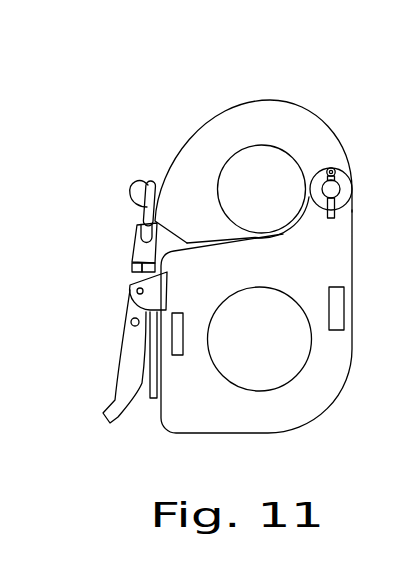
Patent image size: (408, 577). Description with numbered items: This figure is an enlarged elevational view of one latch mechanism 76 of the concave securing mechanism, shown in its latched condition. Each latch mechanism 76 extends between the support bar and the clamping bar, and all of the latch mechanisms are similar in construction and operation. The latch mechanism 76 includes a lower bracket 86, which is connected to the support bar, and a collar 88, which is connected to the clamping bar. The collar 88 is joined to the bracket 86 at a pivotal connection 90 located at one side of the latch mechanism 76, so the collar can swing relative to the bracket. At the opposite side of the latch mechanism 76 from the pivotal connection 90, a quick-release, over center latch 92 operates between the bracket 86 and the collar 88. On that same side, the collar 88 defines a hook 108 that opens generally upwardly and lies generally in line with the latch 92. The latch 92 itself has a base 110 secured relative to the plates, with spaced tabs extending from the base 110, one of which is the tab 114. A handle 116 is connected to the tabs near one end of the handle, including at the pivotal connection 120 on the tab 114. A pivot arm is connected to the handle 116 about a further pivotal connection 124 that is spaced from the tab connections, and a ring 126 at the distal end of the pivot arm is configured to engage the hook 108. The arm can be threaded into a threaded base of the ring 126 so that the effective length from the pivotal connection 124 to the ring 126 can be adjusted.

The latch mechanism 76 is at (308, 88).
The lower bracket 86 is at (287, 412).
The collar 88 is at (252, 117).
The pivotal connection 90 is at (331, 190).
The quick-release, over center latch 92 is at (108, 277).
The hook 108 is at (128, 193).
The base 110 is at (148, 396).
The tab 114 is at (158, 282).
The handle 116 is at (116, 401).
The pivotal connection 120 is at (143, 292).
The pivotal connection 124 is at (131, 322).
The ring 126 is at (152, 181).